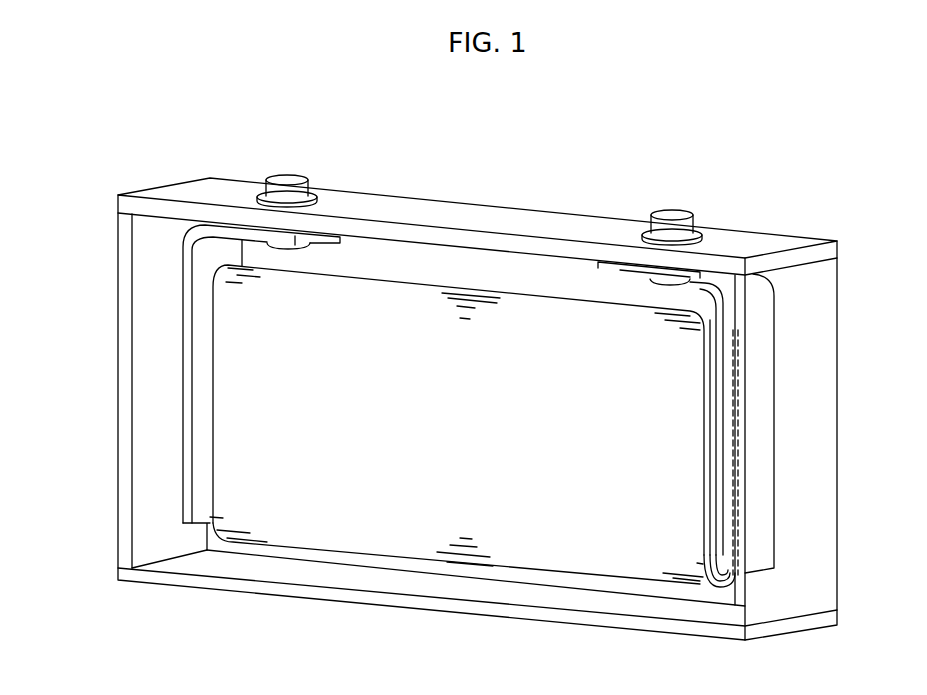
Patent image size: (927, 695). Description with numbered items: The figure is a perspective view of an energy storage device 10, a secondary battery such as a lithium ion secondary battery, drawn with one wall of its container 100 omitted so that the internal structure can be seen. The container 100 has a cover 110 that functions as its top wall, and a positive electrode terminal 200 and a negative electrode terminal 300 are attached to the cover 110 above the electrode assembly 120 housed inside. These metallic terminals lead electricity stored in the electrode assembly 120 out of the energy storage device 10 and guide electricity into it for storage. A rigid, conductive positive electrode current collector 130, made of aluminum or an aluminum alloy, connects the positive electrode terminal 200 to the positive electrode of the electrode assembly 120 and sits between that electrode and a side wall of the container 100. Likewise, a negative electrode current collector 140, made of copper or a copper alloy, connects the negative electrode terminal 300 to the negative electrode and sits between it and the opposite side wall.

The energy storage device 10 is at (772, 167).
The container 100 is at (118, 312).
The cover 110 is at (377, 200).
The electrode assembly 120 is at (395, 535).
The positive electrode current collector 130 is at (183, 378).
The negative electrode current collector 140 is at (762, 400).
The positive electrode terminal 200 is at (285, 178).
The negative electrode terminal 300 is at (672, 209).